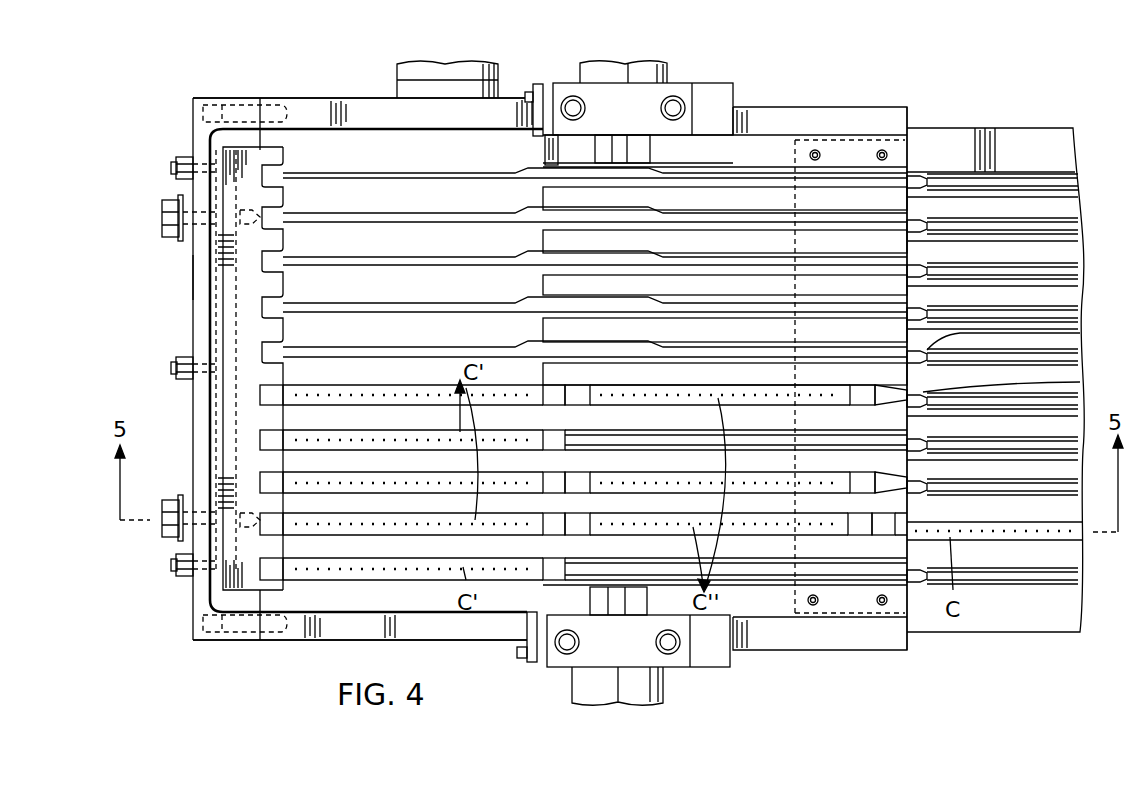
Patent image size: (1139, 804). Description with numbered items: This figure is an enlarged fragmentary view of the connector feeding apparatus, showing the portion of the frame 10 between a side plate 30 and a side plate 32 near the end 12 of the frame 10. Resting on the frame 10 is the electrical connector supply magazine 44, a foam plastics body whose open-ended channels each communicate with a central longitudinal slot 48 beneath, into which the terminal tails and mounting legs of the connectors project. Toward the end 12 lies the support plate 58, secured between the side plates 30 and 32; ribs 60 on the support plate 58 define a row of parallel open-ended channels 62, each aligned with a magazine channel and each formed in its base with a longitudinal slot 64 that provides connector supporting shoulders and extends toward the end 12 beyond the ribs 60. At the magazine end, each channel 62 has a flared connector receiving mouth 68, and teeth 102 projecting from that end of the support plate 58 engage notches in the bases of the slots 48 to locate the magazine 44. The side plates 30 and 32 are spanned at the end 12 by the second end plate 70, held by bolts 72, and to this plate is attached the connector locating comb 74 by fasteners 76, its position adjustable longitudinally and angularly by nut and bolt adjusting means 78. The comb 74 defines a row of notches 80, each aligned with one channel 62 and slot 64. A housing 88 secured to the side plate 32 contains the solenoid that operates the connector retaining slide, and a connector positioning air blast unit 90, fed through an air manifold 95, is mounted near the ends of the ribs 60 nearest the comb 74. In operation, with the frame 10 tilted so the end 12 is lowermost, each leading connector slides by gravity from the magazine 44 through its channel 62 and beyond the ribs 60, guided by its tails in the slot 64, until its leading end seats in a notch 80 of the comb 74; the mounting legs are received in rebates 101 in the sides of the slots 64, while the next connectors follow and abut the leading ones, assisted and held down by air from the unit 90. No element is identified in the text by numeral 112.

The frame 10 is at (815, 662).
The end of the frame 12 is at (193, 278).
The side plate 30 is at (497, 635).
The side plate 32 is at (357, 103).
The electrical connector supply magazine 44 is at (1058, 253).
The central longitudinal slot 48 is at (1058, 150).
The support plate 58 is at (783, 140).
The ribs 60 is at (543, 242).
The channel 62 is at (796, 376).
The longitudinal slot 64 is at (398, 173).
The flared connector receiving mouth 68 is at (900, 183).
The second end plate 70 is at (197, 138).
The bolts 72 is at (241, 103).
The connector locating comb 74 is at (233, 185).
The fasteners 76 is at (163, 212).
The nut and bolt adjusting means 78 is at (175, 163).
The notches 80 is at (281, 268).
The housing 88 is at (483, 65).
The connector positioning air blast unit 90 is at (690, 64).
The air manifold 95 is at (230, 320).
The rebates 101 is at (527, 168).
The teeth 102 is at (920, 227).
The groove 112 is at (1078, 340).